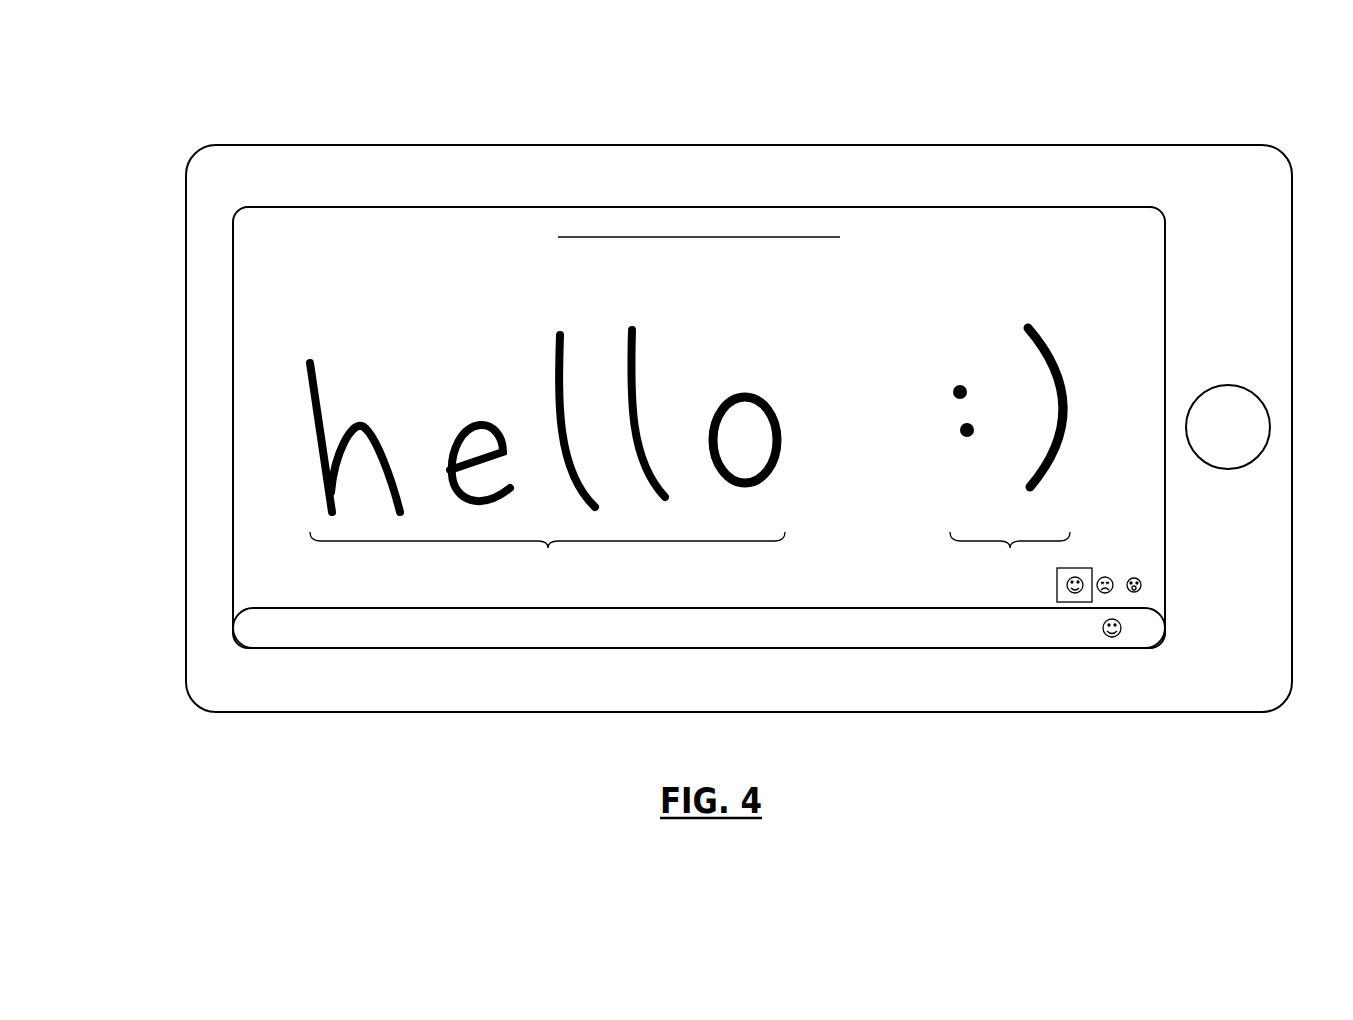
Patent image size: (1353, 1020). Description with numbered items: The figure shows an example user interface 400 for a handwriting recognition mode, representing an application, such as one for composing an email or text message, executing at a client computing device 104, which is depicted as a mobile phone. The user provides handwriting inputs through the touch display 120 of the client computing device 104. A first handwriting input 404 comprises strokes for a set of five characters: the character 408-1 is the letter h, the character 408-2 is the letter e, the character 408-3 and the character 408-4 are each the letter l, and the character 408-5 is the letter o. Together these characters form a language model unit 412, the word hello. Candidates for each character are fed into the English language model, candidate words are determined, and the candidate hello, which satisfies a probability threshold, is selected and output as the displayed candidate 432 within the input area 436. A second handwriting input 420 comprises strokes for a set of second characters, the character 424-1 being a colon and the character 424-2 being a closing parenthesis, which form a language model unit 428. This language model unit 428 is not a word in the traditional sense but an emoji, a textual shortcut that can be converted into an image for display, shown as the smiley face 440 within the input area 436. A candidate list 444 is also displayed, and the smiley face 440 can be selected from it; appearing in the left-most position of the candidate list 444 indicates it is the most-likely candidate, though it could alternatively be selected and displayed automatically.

The client computing device 104 is at (1280, 150).
The touch display 120 is at (1040, 207).
The user interface 400 is at (258, 231).
The first handwriting input 404 is at (447, 425).
The character 408-1 is at (316, 350).
The character 408-2 is at (470, 418).
The character 408-3 is at (555, 318).
The character 408-4 is at (635, 315).
The character 408-5 is at (743, 388).
The language model unit 412 is at (547, 552).
The second handwriting input 420 is at (1073, 421).
The character 424-1 is at (957, 368).
The character 424-2 is at (1048, 322).
The language model unit 428 is at (1010, 554).
The selected candidate output 432 is at (1005, 628).
The input area 436 is at (662, 629).
The smiley face image 440 is at (1132, 628).
The candidate list 444 is at (1148, 597).